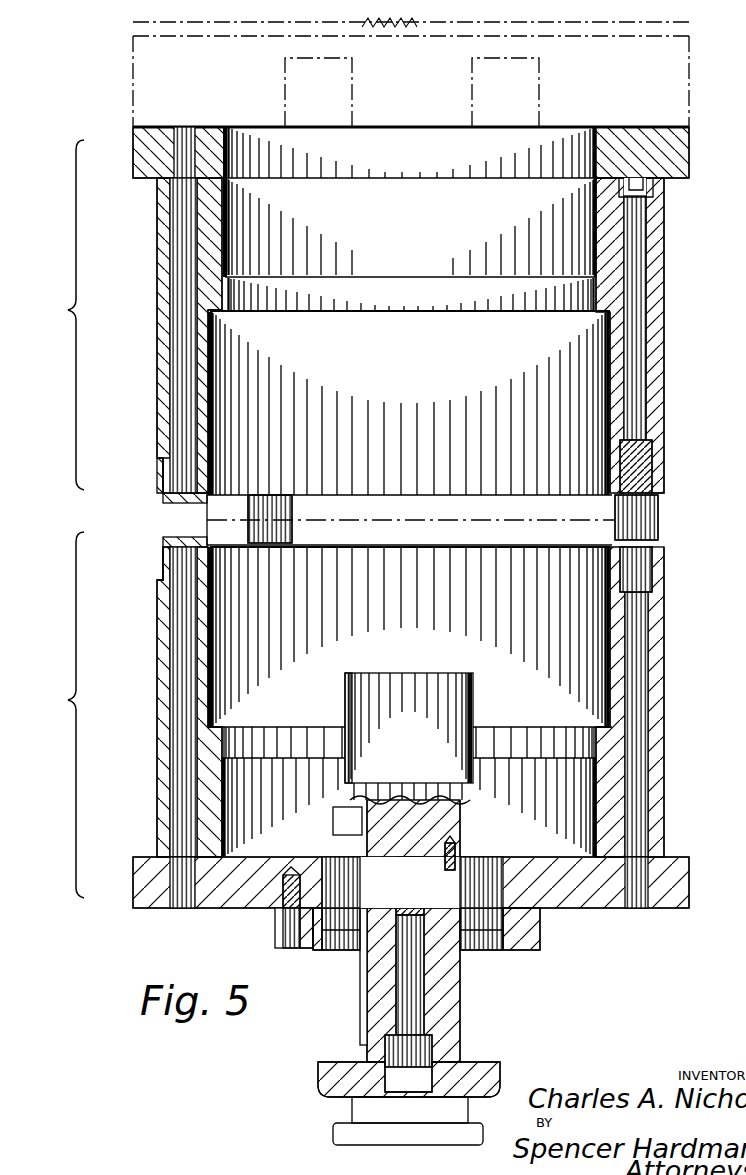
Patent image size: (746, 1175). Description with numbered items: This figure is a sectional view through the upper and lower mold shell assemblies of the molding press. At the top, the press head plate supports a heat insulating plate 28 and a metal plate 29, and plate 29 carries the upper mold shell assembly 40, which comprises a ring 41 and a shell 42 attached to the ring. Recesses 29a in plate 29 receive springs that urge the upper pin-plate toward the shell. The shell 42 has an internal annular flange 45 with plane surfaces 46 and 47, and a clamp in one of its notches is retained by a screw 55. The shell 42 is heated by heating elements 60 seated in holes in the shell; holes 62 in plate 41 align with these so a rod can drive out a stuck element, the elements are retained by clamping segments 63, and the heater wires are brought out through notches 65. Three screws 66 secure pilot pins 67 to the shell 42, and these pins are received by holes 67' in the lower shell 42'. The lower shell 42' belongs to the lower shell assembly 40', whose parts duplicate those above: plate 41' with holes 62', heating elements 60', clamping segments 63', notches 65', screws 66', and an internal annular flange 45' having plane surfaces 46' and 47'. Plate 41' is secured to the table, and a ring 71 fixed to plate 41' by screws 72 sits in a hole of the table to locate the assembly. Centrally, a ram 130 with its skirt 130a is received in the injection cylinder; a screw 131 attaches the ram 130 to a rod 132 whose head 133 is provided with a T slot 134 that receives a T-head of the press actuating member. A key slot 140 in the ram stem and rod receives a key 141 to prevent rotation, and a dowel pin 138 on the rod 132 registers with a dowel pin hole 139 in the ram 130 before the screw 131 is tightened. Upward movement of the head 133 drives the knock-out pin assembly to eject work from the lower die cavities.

The heat insulating plate 28 is at (128, 31).
The metal plate 29 is at (128, 86).
The recesses 29a is at (285, 85).
The ring 41 is at (390, 150).
The plate of lower assembly 41' is at (432, 882).
The holes 62 is at (183, 134).
The holes 62' is at (182, 882).
The shell 42 is at (405, 335).
The lower shell 42' is at (411, 702).
The upper mold shell assembly 40 is at (57, 315).
The lower shell assembly 40' is at (55, 715).
The heating elements 60 is at (152, 335).
The heating elements 60' is at (150, 702).
The notches 65 is at (141, 474).
The notches 65' is at (135, 563).
The clamping segments 63 is at (158, 496).
The clamping segments 63' is at (157, 534).
The screws 66 is at (660, 335).
The screws 66' is at (636, 724).
The pilot pins 67 is at (473, 491).
The holes 67' is at (666, 616).
The plane surface 46 is at (410, 203).
The plane surface 46' is at (409, 805).
The plane surface 47 is at (410, 400).
The plane surface 47' is at (410, 642).
The internal annular flange 45 is at (411, 318).
The internal annular flange 45' is at (409, 728).
The screw 55 is at (330, 482).
The ram 130 is at (430, 674).
The piston skirt 130a is at (460, 800).
The key 141 is at (333, 822).
The dowel pin hole 139 is at (450, 842).
The dowel pin 138 is at (455, 852).
The key slot 140 is at (360, 986).
The rod 132 is at (460, 988).
The screw 131 is at (410, 1070).
The head 133 is at (485, 1062).
The T slot 134 is at (352, 1113).
The screws 72 is at (291, 948).
The ring 71 is at (540, 938).